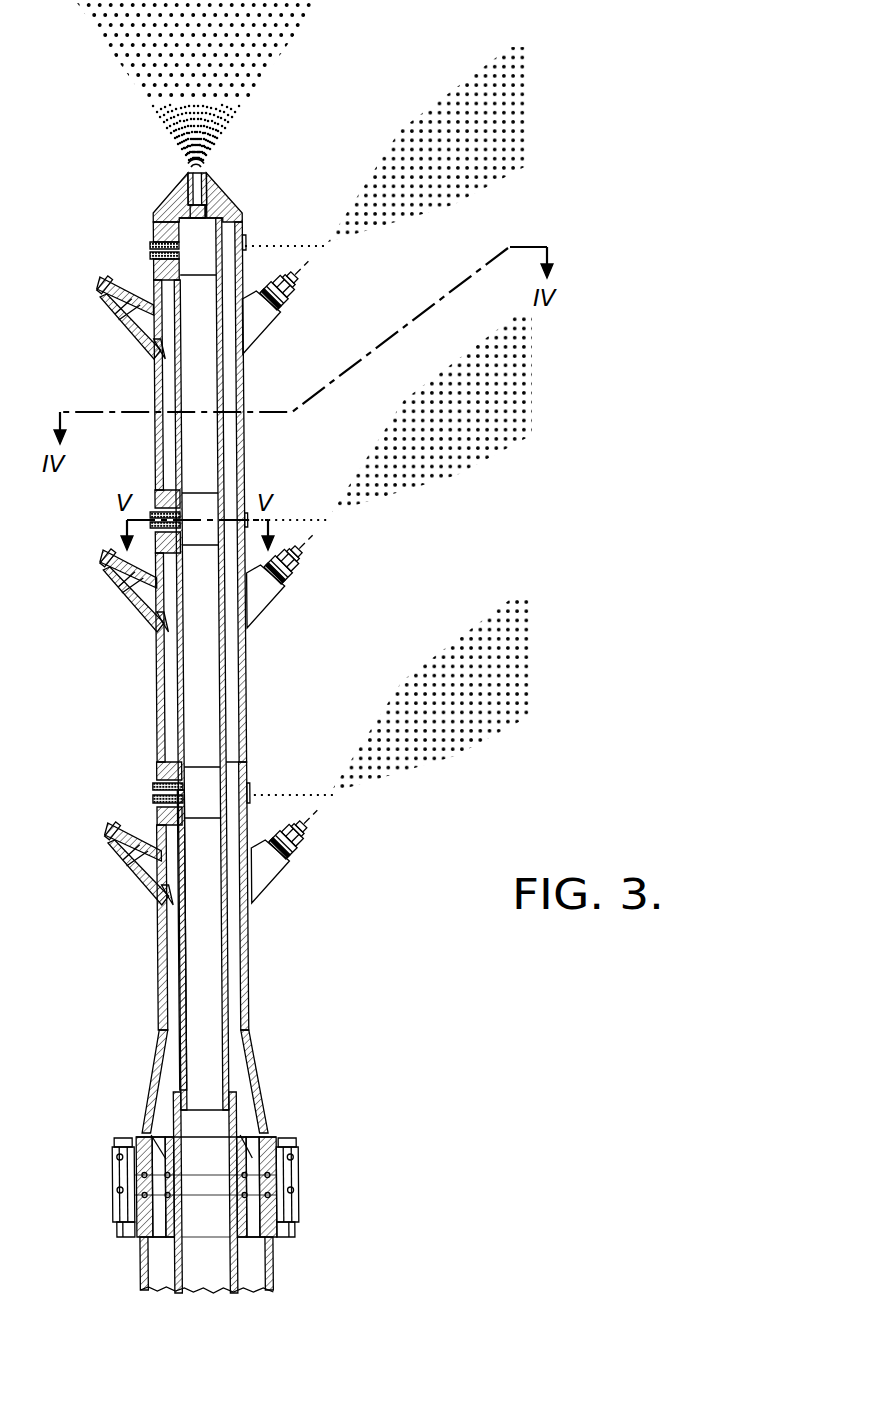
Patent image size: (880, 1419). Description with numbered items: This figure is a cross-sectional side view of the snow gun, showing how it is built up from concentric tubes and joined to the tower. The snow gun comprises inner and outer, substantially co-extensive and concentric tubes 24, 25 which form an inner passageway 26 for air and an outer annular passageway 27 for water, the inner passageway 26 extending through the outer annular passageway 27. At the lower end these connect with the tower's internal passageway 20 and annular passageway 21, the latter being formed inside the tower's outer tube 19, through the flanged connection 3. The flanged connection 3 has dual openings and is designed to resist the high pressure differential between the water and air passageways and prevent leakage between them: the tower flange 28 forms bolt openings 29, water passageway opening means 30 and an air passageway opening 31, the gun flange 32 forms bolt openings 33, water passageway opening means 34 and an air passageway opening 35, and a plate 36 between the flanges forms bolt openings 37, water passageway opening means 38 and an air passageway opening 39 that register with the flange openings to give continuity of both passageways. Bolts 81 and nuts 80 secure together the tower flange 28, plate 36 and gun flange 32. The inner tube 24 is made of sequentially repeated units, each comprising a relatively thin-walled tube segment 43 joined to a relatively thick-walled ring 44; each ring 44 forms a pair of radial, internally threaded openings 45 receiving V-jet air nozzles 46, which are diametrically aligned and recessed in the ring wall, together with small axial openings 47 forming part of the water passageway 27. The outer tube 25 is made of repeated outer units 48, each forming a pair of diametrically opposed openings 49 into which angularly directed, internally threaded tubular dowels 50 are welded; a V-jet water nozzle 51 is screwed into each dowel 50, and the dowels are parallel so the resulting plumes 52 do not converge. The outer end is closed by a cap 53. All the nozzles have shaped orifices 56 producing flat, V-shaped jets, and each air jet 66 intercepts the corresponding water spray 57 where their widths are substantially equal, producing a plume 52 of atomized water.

The flanged connection 3 is at (350, 1192).
The outer tube 19 is at (275, 1262).
The internal passageway 20 is at (200, 1291).
The annular passageway 21 is at (245, 1267).
The inner tube 24 is at (228, 1010).
The outer tube 25 is at (247, 1015).
The inner passageway 26 is at (208, 982).
The outer annular passageway 27 is at (233, 951).
The tower flange 28 is at (295, 1190).
The bolt openings 29 is at (293, 1217).
The water passageway opening means 30 is at (147, 1235).
The air passageway opening 31 is at (180, 1262).
The gun flange 32 is at (113, 1150).
The bolt openings 33 is at (120, 1163).
The water passageway opening means 34 is at (250, 1160).
The air passageway opening 35 is at (213, 1165).
The plate 36 is at (297, 1177).
The bolt openings 37 is at (115, 1204).
The water passageway opening means 38 is at (135, 1176).
The air passageway opening 39 is at (206, 1222).
The thin-walled tube segment 43 is at (178, 1007).
The thick-walled ring 44 is at (250, 772).
The radial internally threaded openings 45 is at (160, 818).
The V-jet air nozzles 46 is at (153, 784).
The axial openings 47 is at (235, 796).
The outer unit 48 is at (248, 704).
The openings 49 is at (152, 628).
The tubular dowel 50 is at (123, 600).
The V-jet water nozzle 51 is at (103, 560).
The plume 52 is at (470, 455).
The cap 53 is at (226, 196).
The shaped orifices 56 is at (150, 250).
The water spray 57 is at (315, 535).
The air jet 66 is at (297, 521).
The nuts 80 is at (117, 1229).
The bolts 81 is at (117, 1140).